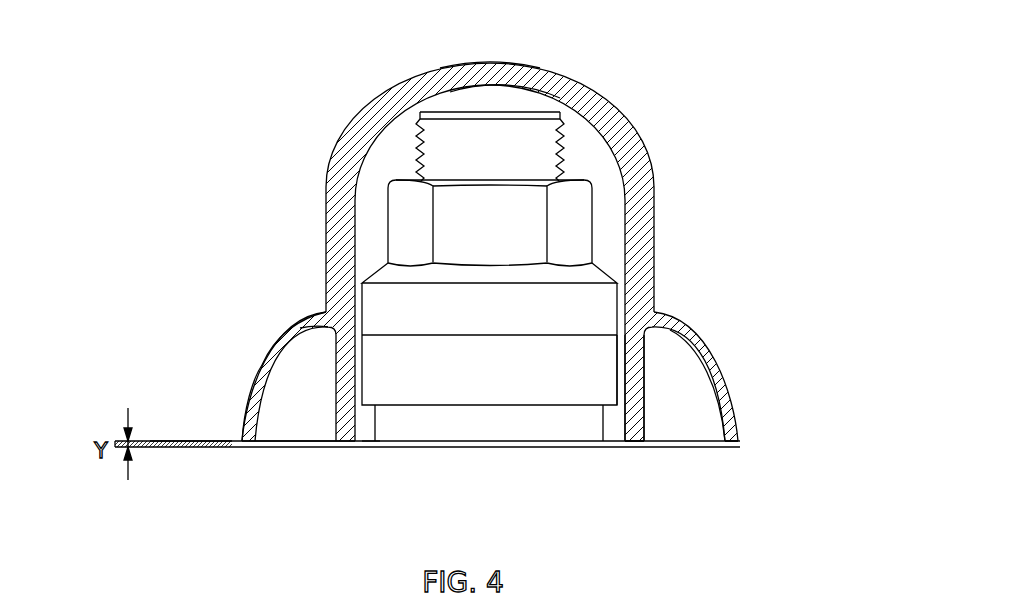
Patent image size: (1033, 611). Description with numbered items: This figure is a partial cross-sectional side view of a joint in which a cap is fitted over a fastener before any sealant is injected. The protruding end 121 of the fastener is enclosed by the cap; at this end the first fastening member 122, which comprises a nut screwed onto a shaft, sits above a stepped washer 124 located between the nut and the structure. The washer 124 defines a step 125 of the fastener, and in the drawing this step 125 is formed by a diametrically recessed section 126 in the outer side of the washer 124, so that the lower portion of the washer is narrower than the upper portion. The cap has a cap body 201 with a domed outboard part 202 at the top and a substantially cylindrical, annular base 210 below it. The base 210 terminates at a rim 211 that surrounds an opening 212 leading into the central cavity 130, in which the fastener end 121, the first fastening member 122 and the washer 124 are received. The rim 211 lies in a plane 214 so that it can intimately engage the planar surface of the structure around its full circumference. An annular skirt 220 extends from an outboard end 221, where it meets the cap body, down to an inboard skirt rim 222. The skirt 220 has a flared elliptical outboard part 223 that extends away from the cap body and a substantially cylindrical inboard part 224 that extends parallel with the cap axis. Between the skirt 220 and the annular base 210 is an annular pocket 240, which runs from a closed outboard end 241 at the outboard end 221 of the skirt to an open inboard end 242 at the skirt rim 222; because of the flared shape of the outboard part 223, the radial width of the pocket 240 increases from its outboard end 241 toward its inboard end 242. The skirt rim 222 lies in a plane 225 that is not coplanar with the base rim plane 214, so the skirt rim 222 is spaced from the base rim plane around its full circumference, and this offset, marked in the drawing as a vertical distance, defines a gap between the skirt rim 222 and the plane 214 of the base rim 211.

The end of the fastener 121 is at (440, 157).
The first fastening member 122 is at (568, 207).
The washer 124 is at (582, 430).
The step 125 is at (610, 402).
The diametrically recessed section 126 is at (478, 432).
The central cavity 130 is at (608, 207).
The cap body 201 is at (618, 152).
The domed outboard part 202 is at (503, 84).
The base 210 is at (642, 343).
The rim 211 is at (635, 447).
The opening 212 is at (365, 447).
The plane 214 is at (155, 450).
The annular skirt 220 is at (267, 342).
The outboard end 221 is at (656, 310).
The skirt rim 222 is at (730, 447).
The flared elliptical outboard part 223 is at (282, 330).
The substantially cylindrical inboard part 224 is at (247, 387).
The plane 225 is at (183, 440).
The annular pocket 240 is at (680, 413).
The closed outboard end 241 is at (312, 340).
The open inboard end 242 is at (302, 432).